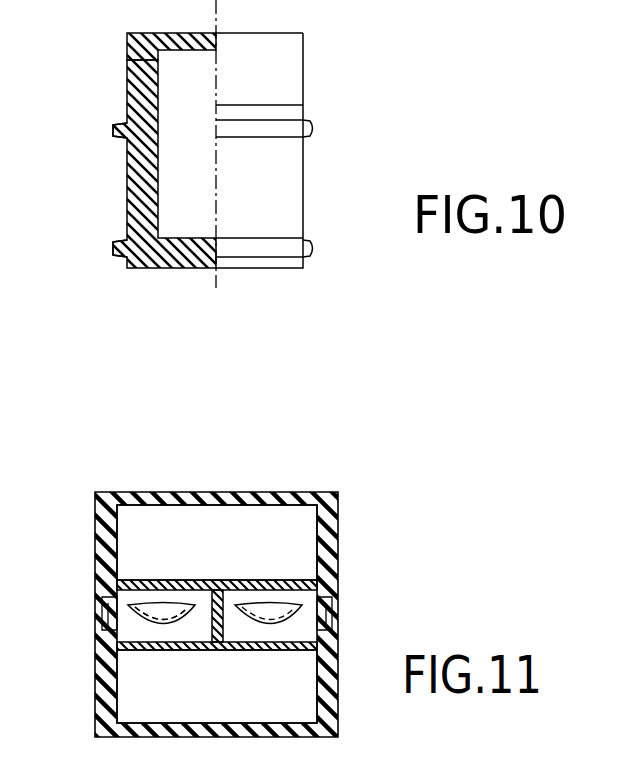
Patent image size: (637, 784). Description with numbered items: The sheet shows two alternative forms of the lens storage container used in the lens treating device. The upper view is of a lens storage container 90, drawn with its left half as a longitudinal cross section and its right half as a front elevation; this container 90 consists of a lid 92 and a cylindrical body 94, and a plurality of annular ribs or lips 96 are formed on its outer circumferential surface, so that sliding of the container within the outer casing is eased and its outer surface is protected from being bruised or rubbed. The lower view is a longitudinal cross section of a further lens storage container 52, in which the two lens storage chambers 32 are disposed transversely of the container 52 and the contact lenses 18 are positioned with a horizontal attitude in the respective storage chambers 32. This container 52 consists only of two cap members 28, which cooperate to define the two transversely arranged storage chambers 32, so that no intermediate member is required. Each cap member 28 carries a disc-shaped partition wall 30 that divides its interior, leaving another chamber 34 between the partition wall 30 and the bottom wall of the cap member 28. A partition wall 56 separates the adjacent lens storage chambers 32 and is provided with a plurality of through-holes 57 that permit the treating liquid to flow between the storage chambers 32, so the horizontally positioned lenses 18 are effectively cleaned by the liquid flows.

In FIG. 10, the lens storage container 90 is at (252, 141).
In FIG. 10, the lid 92 is at (295, 70).
In FIG. 10, the cylindrical body 94 is at (290, 196).
In FIG. 10, the annular ribs or lips 96 is at (313, 128).
In FIG. 11, the lens storage container 52 is at (244, 602).
In FIG. 11, the cap members 28 is at (262, 497).
In FIG. 11, the chambers 34 is at (198, 518).
In FIG. 11, the partition wall 30 is at (148, 563).
In FIG. 11, the lens storage chambers 32 is at (135, 590).
In FIG. 11, the contact lenses 18 is at (148, 613).
In FIG. 11, the partition wall 56 is at (213, 608).
In FIG. 11, the through-holes 57 is at (218, 628).